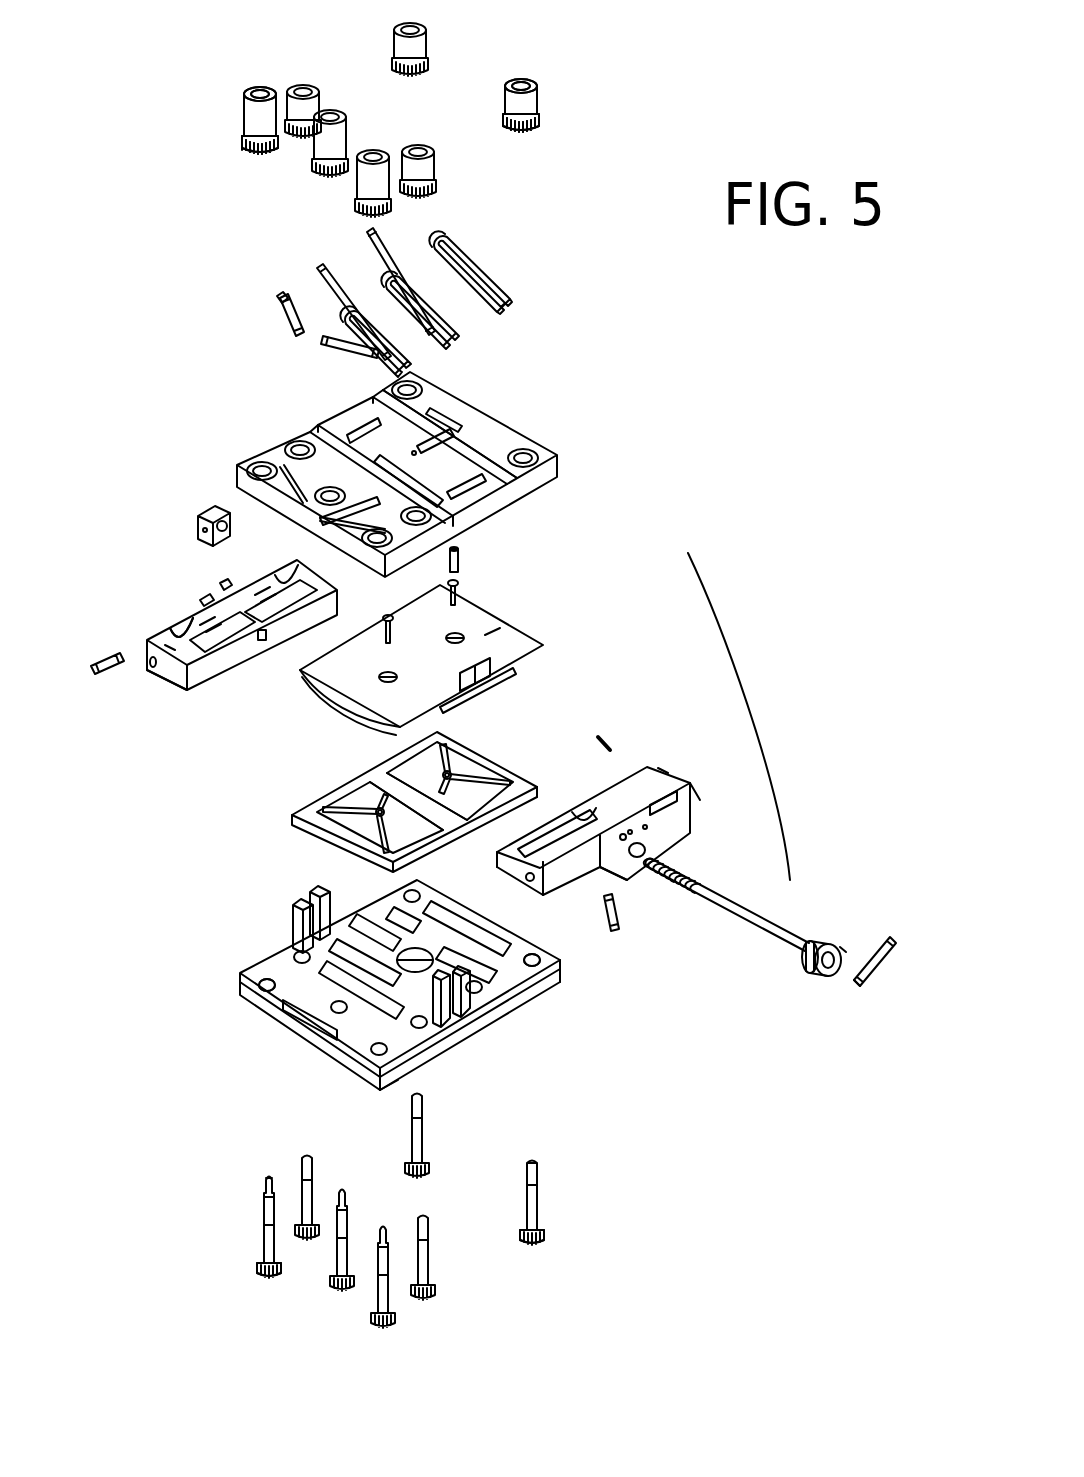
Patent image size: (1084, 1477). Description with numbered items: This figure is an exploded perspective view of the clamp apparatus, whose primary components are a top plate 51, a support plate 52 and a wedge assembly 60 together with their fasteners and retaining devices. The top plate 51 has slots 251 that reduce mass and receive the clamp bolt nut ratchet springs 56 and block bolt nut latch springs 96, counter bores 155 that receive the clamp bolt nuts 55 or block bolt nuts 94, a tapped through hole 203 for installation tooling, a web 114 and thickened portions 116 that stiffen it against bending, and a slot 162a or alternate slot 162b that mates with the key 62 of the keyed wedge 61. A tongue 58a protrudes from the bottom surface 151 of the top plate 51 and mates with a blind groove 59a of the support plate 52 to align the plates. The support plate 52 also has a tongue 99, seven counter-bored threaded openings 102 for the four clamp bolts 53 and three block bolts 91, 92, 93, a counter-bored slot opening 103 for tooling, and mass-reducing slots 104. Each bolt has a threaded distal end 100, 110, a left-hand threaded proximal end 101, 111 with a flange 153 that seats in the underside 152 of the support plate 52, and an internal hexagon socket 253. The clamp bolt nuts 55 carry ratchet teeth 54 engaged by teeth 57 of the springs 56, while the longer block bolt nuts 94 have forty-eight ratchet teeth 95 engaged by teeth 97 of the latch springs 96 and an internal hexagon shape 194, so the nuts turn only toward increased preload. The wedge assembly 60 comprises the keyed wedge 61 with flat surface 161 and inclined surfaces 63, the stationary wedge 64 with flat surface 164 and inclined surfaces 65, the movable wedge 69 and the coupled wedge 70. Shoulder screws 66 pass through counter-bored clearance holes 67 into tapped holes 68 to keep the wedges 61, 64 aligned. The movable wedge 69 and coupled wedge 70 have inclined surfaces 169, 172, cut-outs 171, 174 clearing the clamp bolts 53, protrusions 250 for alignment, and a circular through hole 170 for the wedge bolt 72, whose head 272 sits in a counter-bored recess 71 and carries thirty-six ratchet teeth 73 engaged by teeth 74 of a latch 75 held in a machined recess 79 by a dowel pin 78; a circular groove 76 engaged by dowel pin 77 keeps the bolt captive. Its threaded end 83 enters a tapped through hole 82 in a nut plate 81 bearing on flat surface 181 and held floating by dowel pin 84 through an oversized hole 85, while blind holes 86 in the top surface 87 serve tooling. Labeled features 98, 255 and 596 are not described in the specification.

The top plate 51 is at (560, 465).
The support plate 52 is at (558, 982).
The clamp bolts 53 is at (315, 1160).
The clamp bolt nut ratchet teeth 54 is at (535, 125).
The clamp bolt nuts 55 is at (430, 40).
The clamp bolt nut ratchet springs 56 is at (480, 263).
The ratchet teeth 57 is at (518, 301).
The tongue 58a is at (470, 560).
The blind groove 59a is at (456, 1000).
The wedge assembly 60 is at (739, 716).
The keyed wedge 61 is at (545, 645).
The key 62 is at (495, 688).
The opposing inclined surfaces 63 is at (372, 727).
The stationary wedge 64 is at (350, 783).
The opposing inclined surfaces 65 is at (348, 855).
The shoulder screws 66 is at (462, 582).
The counter-bored clearance holes 67 is at (403, 660).
The tapped holes 68 is at (470, 770).
The movable wedge 69 is at (690, 800).
The coupled wedge 70 is at (235, 672).
The circular counter-bored recess 71 is at (640, 880).
The wedge bolt 72 is at (775, 920).
The ratchet teeth 73 is at (820, 978).
The teeth 74 is at (862, 982).
The latch 75 is at (882, 980).
The circular groove 76 is at (843, 958).
The dowel pin 77 is at (620, 932).
The dowel pin 78 is at (605, 740).
The machined recess 79 is at (680, 848).
The nut plate 81 is at (210, 508).
The tapped through hole 82 is at (232, 562).
The threaded end 83 is at (690, 897).
The dowel pin 84 is at (113, 668).
The oversized through hole 85 is at (196, 520).
The blind holes 86 is at (700, 800).
The top surface 87 is at (450, 772).
The block bolt 91 is at (335, 1265).
The block bolt 92 is at (262, 1230).
The block bolt 93 is at (396, 1300).
The block bolt nuts 94 is at (244, 108).
The ratchet teeth 95 is at (243, 142).
The block bolt nut latch springs 96 is at (290, 320).
The ratchet teeth 97 is at (280, 296).
The slot 98 is at (288, 536).
The tongue 99 is at (290, 1003).
The distal end 100 is at (533, 1154).
The proximal end 101 is at (540, 1260).
The counter-bored threaded openings 102 is at (262, 982).
The counter-bored slot opening 103 is at (392, 933).
The slots 104 is at (492, 1000).
The distal end 110 is at (270, 1168).
The proximal end 111 is at (268, 1287).
The web 114 is at (508, 414).
The thickened portions 116 is at (395, 1090).
The bottom surface 151 is at (520, 480).
The underside 152 is at (428, 1070).
The flange 153 is at (258, 1273).
The counter bores 155 is at (262, 464).
The flat surface 161 is at (487, 635).
The slot 162a is at (490, 483).
The slot 162b is at (350, 422).
The flat surface 164 is at (548, 823).
The inclined surface 169 is at (502, 882).
The circular through hole 170 is at (264, 645).
The cut-out 171 is at (560, 884).
The inclined surface 172 is at (175, 680).
The cut-out 174 is at (168, 626).
The flat surface 181 is at (204, 598).
The internal hexagon interior shape 194 is at (262, 86).
The tapped through hole 203 is at (415, 450).
The protrusions 250 is at (170, 655).
The slots 251 is at (462, 427).
The internal hexagon socket 253 is at (550, 1238).
The bore 255 is at (362, 556).
The wedge bolt head 272 is at (824, 992).
The posts 596 is at (298, 893).